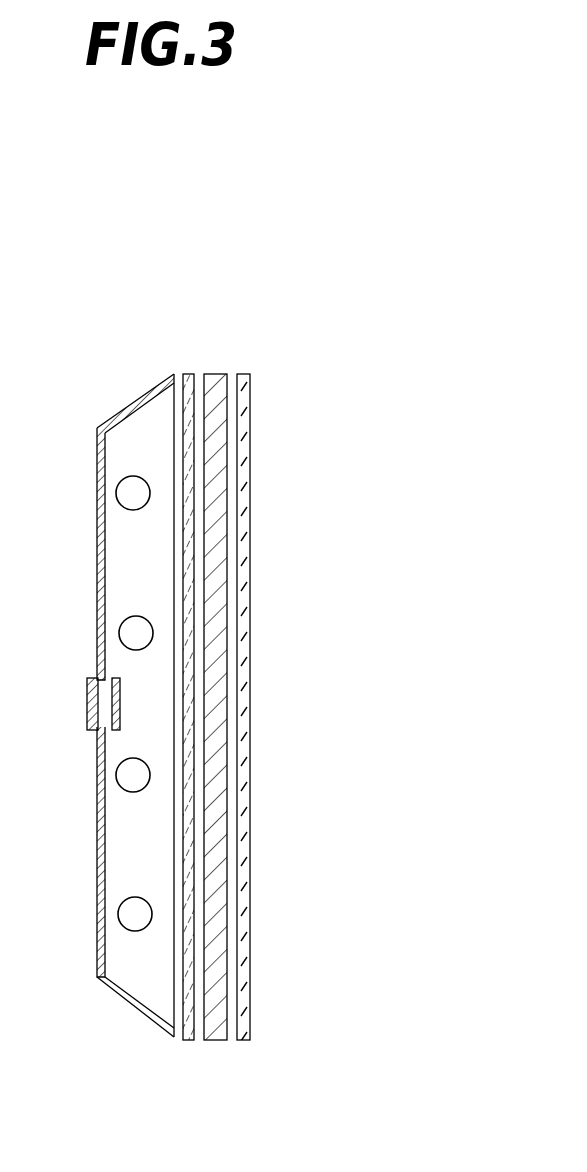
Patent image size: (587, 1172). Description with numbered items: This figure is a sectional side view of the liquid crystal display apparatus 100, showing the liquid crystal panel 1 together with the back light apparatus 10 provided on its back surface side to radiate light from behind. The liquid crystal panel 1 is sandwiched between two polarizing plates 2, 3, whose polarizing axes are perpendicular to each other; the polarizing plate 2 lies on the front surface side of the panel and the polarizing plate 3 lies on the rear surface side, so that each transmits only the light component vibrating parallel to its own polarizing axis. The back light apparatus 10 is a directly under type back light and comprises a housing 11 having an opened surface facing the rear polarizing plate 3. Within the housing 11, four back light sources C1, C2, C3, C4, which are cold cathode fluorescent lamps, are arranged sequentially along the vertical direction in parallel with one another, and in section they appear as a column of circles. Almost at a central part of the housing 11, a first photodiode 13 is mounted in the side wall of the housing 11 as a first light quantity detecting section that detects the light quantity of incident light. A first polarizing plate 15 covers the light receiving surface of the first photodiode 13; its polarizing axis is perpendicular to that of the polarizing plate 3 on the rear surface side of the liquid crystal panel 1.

The liquid crystal display apparatus 100 is at (206, 245).
The liquid crystal panel 1 is at (212, 383).
The polarizing plate 2 is at (248, 380).
The polarizing plate 3 is at (186, 375).
The back light apparatus 10 is at (132, 400).
The housing 11 is at (97, 453).
The first photodiode 13 is at (88, 705).
The first polarizing plate 15 is at (110, 677).
The back light source C1 is at (128, 496).
The back light source C2 is at (128, 632).
The back light source C3 is at (128, 777).
The back light source C4 is at (120, 928).